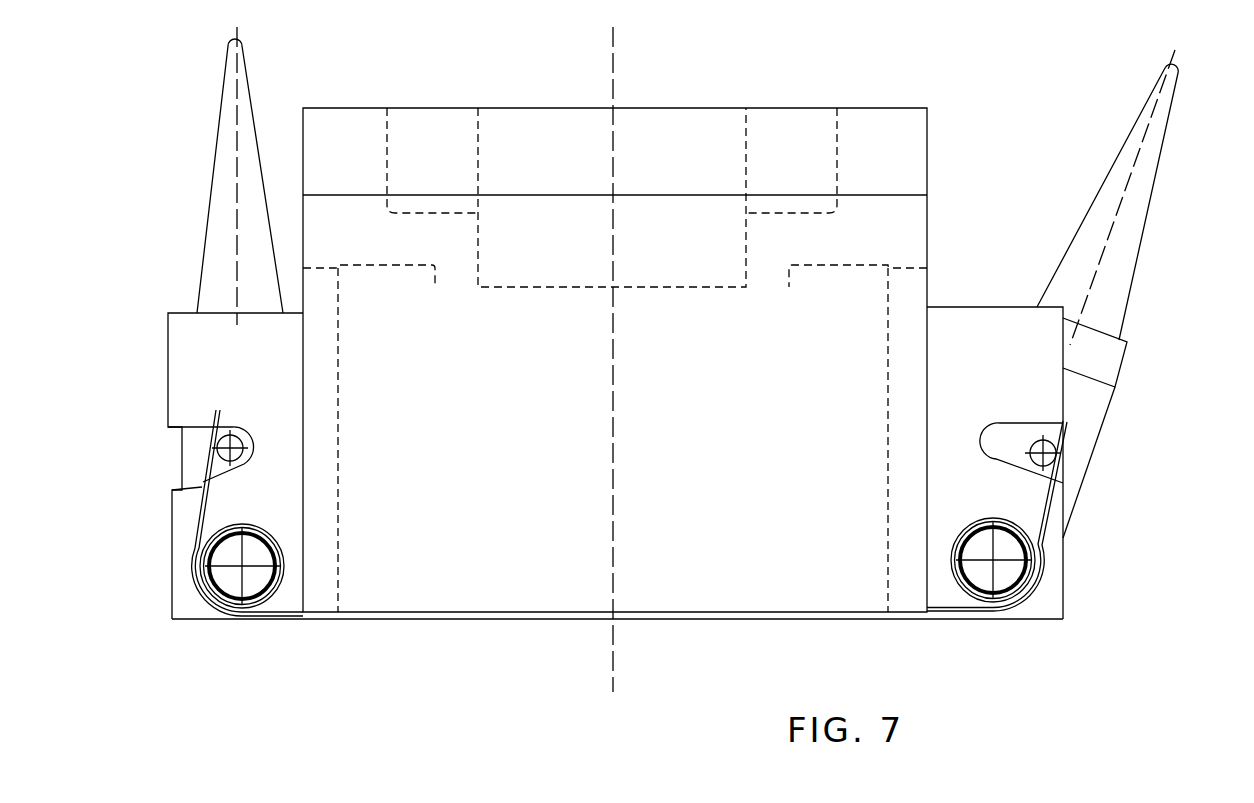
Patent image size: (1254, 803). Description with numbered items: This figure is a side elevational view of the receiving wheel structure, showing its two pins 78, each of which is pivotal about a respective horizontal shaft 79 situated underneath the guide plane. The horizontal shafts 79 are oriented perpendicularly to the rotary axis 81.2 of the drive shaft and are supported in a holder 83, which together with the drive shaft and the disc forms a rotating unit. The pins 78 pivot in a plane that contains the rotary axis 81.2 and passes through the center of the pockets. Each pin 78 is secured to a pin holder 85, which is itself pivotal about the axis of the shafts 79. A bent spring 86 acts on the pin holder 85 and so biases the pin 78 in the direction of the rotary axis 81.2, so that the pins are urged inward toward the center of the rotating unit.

The pin 78 is at (240, 165).
The horizontal shaft 79 is at (240, 572).
The rotary axis 81.2 is at (615, 380).
The holder 83 is at (970, 335).
The pin holder 85 is at (1093, 405).
The bent spring 86 is at (203, 492).